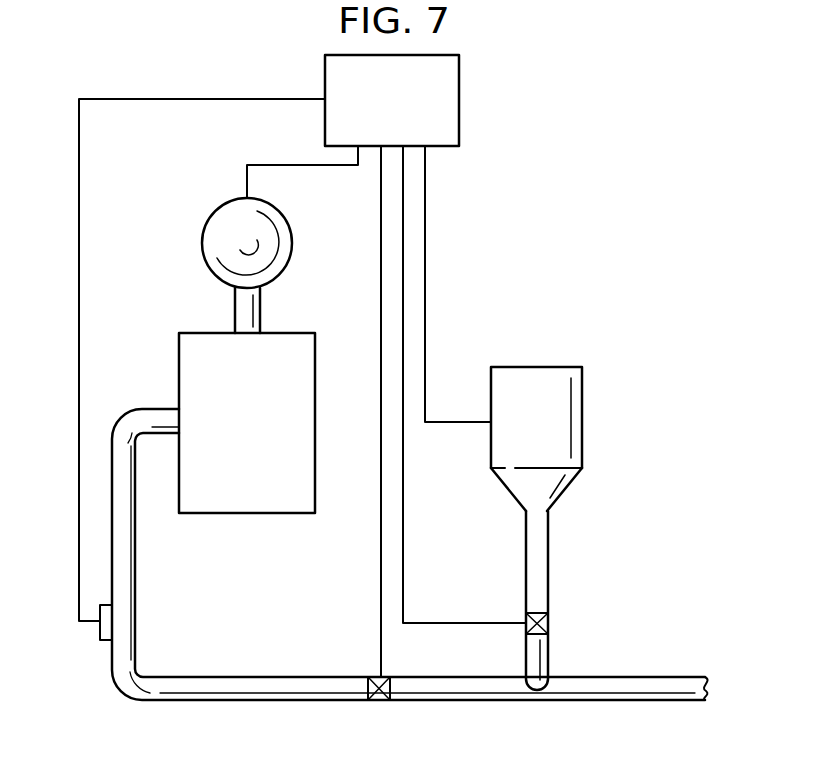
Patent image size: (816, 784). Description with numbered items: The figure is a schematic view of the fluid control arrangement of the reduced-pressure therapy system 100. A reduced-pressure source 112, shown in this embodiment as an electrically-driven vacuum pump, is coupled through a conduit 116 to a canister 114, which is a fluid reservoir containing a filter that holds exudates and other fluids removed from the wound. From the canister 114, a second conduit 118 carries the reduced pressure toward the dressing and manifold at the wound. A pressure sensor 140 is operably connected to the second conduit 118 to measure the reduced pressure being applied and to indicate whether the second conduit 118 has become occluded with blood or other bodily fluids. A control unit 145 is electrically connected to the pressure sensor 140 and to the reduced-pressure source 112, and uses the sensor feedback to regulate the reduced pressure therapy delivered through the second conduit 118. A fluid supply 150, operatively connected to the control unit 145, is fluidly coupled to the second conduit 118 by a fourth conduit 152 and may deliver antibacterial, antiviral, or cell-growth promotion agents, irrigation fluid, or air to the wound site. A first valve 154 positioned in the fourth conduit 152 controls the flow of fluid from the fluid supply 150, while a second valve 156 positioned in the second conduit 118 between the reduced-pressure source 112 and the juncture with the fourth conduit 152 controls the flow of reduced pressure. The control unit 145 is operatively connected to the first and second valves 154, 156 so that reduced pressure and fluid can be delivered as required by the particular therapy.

The reduced-pressure system 100 is at (653, 82).
The reduced-pressure source 112 is at (203, 243).
The canister 114 is at (268, 436).
The conduit 116 is at (235, 310).
The second conduit 118 is at (183, 702).
The pressure sensor 140 is at (98, 630).
The control unit 145 is at (413, 113).
The fluid supply 150 is at (583, 411).
The fourth conduit 152 is at (548, 556).
The first valve 154 is at (548, 628).
The second valve 156 is at (384, 702).